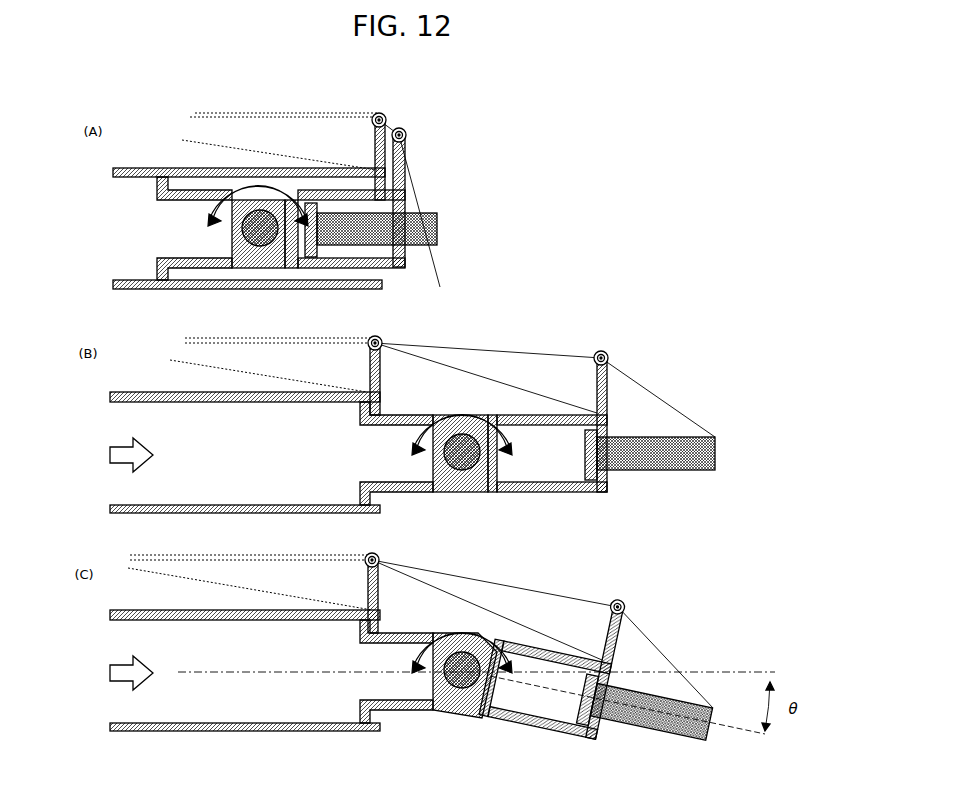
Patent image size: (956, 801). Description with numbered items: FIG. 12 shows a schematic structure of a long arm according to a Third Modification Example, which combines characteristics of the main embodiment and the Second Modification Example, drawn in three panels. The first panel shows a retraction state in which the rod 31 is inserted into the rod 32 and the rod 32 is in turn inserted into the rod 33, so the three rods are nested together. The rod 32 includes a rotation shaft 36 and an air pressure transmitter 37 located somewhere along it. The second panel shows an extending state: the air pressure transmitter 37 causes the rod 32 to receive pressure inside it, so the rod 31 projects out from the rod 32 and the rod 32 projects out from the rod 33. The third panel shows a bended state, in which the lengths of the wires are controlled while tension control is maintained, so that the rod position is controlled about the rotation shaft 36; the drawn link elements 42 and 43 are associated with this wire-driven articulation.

The rod 31 is at (423, 247).
The rod 32 is at (323, 190).
The rod 33 is at (157, 168).
The rotation shaft 36 is at (259, 232).
The air pressure transmitter 37 is at (297, 265).
The second lever 42 is at (405, 168).
The first lever 43 is at (370, 116).